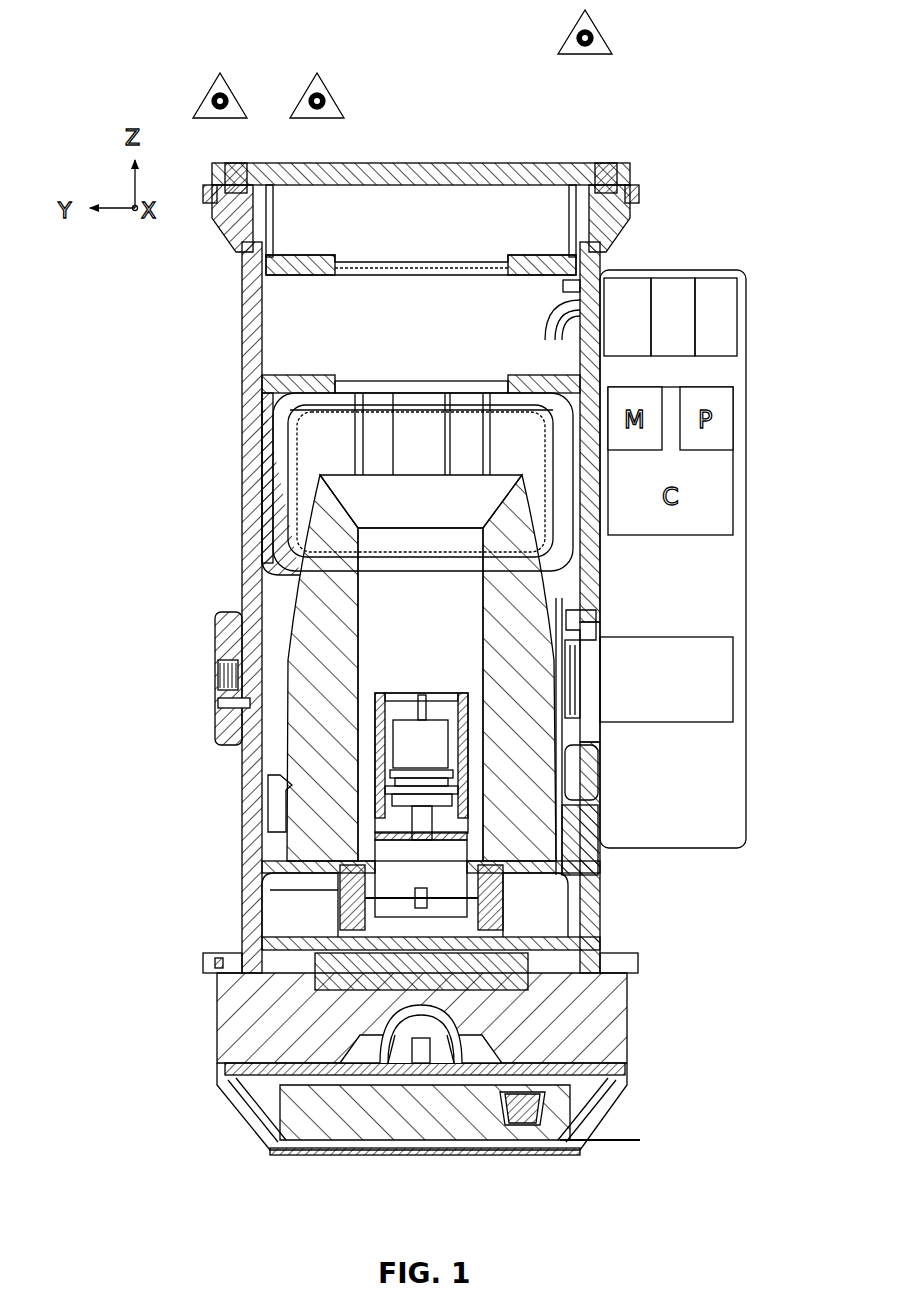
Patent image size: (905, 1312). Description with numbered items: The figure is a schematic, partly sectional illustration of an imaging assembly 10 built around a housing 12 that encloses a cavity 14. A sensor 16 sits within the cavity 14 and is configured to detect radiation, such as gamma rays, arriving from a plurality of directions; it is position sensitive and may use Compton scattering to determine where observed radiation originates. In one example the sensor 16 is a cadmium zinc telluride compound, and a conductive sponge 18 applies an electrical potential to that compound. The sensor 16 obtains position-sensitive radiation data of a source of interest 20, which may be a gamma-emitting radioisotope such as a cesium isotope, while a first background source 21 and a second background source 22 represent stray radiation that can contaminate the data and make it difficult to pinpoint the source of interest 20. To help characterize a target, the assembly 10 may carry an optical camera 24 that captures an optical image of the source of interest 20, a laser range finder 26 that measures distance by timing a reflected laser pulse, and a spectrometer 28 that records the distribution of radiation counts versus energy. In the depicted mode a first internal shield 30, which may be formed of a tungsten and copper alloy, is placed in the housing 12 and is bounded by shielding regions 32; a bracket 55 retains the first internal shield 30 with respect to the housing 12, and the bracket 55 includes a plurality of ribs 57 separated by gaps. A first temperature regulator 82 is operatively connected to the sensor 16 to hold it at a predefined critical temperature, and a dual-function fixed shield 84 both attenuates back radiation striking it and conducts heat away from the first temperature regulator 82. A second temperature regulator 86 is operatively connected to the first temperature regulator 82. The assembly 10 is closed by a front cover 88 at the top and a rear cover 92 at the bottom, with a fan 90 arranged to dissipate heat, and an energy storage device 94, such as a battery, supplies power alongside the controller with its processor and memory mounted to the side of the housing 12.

The imaging assembly 10 is at (735, 66).
The housing 12 is at (250, 355).
The cavity 14 is at (384, 652).
The sensor 16 is at (437, 756).
The conductive sponge 18 is at (402, 710).
The source of interest 20 is at (598, 30).
The first background source 21 is at (228, 93).
The second background source 22 is at (324, 93).
The optical camera 24 is at (632, 288).
The laser range finder 26 is at (678, 288).
The spectrometer 28 is at (725, 288).
The first internal shield 30 is at (385, 555).
The shielding blocks 32 is at (344, 662).
The bracket 55 is at (272, 404).
The ribs 57 is at (303, 440).
The first temperature regulator 82 is at (434, 877).
The dual-function fixed shield 84 is at (436, 987).
The second temperature regulator 86 is at (340, 910).
The front cover 88 is at (578, 163).
The fan 90 is at (378, 1020).
The rear cover 92 is at (402, 1162).
The energy storage device 94 is at (682, 694).